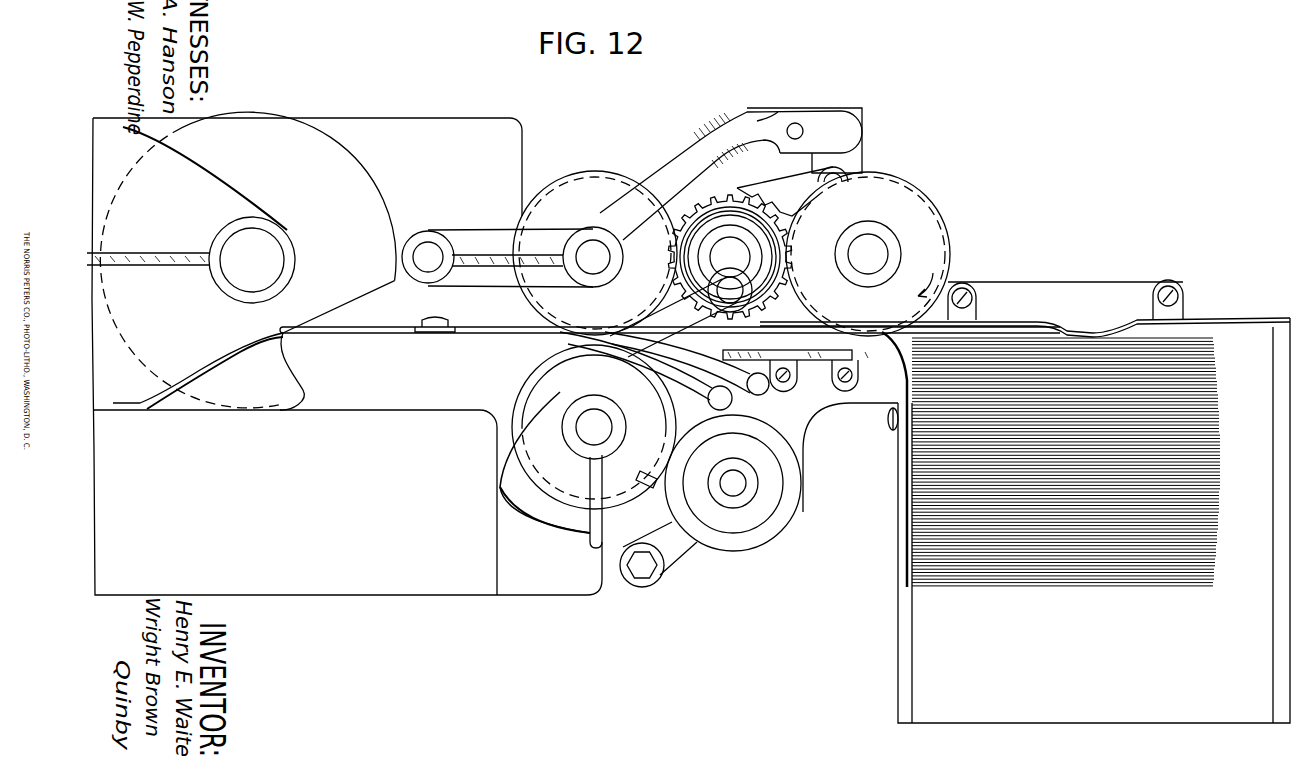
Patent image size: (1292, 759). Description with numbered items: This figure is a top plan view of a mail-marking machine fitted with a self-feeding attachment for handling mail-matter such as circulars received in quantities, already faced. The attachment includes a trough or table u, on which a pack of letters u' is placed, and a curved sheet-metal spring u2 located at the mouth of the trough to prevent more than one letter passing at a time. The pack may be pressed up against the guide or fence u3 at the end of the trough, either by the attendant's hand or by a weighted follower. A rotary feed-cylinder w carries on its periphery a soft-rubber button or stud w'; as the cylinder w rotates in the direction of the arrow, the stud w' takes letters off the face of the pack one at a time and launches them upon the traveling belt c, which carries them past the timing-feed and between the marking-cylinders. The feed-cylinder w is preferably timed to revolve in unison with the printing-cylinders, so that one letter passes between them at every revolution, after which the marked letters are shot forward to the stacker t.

The stacker t is at (347, 180).
The rotary feed-cylinder w is at (890, 254).
The soft-rubber button or stud w' is at (1025, 313).
The guide or fence u3 is at (1133, 320).
The traveling belt c is at (795, 358).
The trough or table u is at (1068, 520).
The pack of letters u' is at (1051, 481).
The curved sheet-metal spring u2 is at (900, 370).